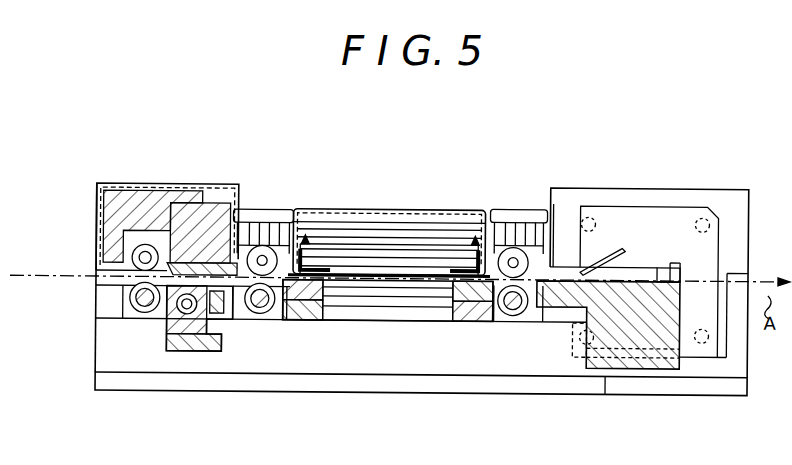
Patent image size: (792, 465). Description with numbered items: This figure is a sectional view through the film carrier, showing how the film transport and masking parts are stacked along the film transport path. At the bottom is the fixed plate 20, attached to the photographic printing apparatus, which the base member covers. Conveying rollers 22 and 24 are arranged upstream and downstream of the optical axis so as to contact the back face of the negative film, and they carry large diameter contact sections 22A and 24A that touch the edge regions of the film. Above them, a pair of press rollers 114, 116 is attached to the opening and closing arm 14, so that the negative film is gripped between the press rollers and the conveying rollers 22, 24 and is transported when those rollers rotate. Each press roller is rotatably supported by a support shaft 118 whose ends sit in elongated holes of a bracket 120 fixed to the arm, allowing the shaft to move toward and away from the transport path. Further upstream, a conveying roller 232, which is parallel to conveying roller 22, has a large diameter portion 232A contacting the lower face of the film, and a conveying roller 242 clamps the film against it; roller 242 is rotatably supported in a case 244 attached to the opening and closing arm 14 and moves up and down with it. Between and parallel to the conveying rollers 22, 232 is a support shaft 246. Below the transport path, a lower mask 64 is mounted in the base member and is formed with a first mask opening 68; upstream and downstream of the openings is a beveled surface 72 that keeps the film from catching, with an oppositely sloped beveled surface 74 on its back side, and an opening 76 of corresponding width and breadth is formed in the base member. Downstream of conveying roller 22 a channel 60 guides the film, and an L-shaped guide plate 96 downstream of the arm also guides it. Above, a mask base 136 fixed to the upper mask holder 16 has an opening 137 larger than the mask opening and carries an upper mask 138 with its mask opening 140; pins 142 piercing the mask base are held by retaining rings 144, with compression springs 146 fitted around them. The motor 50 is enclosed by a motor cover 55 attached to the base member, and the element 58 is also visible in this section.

The opening and closing arm 14 is at (528, 207).
The upper mask holder 16 is at (437, 207).
The fixed plate 20 is at (665, 390).
The conveying roller 22 is at (257, 312).
The large diameter contact section 22A is at (277, 323).
The conveying roller 24 is at (520, 318).
The large diameter contact section 24A is at (505, 318).
The motor 50 is at (700, 202).
The motor cover 55 is at (645, 184).
The hole 58 is at (697, 321).
The channel 60 is at (658, 266).
The lower mask 64 is at (350, 300).
The first mask opening 68 is at (410, 300).
The beveled surface 72 is at (388, 250).
The beveled surface 74 is at (320, 306).
The opening 76 is at (490, 320).
The L-shaped guide plate 96 is at (618, 248).
The press roller 114 is at (258, 208).
The press roller 116 is at (551, 255).
The support shaft 118 is at (290, 208).
The bracket 120 is at (243, 208).
The mask base 136 is at (366, 207).
The opening 137 is at (421, 216).
The upper mask 138 is at (338, 242).
The mask opening 140 is at (438, 256).
The pin 142 is at (316, 207).
The retaining ring 144 is at (333, 215).
The compression spring 146 is at (373, 216).
The conveying roller 232 is at (145, 311).
The large diameter portion 232A is at (125, 300).
The conveying roller 242 is at (96, 268).
The case 244 is at (166, 183).
The support shaft 246 is at (181, 351).